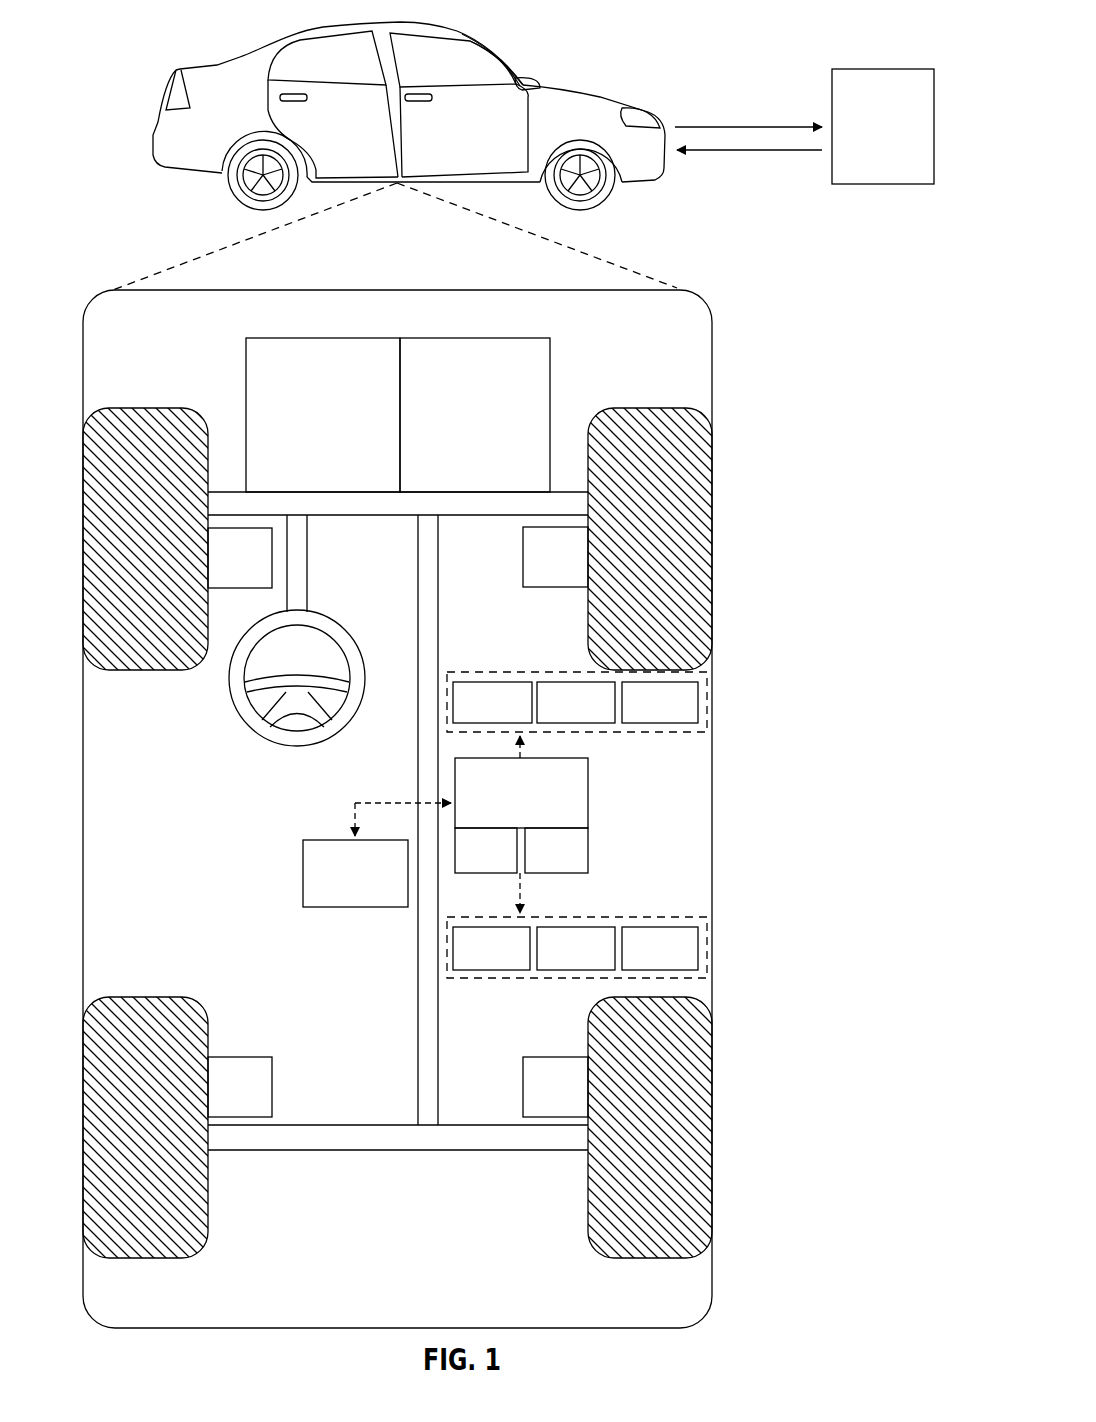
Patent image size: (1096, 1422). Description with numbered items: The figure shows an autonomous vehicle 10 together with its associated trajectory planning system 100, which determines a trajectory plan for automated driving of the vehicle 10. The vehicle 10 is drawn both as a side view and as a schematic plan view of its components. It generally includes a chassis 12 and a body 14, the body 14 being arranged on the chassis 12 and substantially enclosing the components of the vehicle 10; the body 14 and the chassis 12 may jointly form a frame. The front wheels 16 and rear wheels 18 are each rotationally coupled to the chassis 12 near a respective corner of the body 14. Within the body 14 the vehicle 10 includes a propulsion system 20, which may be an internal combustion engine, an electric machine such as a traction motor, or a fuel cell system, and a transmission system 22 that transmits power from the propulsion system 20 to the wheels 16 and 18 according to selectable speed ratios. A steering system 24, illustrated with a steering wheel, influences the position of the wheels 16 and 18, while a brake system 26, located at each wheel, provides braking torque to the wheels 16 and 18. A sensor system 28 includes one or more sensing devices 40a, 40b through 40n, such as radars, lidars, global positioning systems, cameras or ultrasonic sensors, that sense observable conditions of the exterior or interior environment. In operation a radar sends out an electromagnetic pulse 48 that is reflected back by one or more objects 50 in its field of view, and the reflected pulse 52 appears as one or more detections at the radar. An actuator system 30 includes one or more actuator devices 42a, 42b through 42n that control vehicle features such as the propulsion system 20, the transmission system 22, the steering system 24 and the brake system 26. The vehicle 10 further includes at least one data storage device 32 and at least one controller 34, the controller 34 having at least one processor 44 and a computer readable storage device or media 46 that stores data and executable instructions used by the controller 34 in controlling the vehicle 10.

The vehicle 10 is at (163, 105).
The trajectory planning system 100 is at (716, 284).
The chassis 12 is at (417, 990).
The body 14 is at (83, 772).
The front wheels 16 is at (145, 408).
The rear wheels 18 is at (148, 1258).
The propulsion system 20 is at (336, 430).
The transmission system 22 is at (486, 430).
The steering system 24 is at (318, 586).
The brake system 26 is at (254, 570).
The sensor system 28 is at (538, 672).
The actuator system 30 is at (545, 982).
The data storage device 32 is at (369, 888).
The controller 34 is at (534, 812).
The sensing device 40a is at (514, 718).
The sensing device 40b is at (598, 718).
The sensing device 40n is at (682, 718).
The actuator device 42a is at (514, 964).
The actuator device 42b is at (598, 964).
The actuator device 42n is at (682, 964).
The processor 44 is at (500, 866).
The computer readable storage device or media 46 is at (570, 866).
The electromagnetic pulse 48 is at (748, 127).
The object 50 is at (893, 69).
The reflected pulse 52 is at (748, 150).